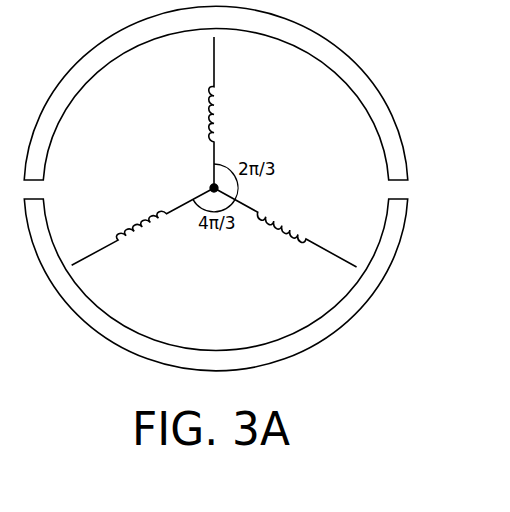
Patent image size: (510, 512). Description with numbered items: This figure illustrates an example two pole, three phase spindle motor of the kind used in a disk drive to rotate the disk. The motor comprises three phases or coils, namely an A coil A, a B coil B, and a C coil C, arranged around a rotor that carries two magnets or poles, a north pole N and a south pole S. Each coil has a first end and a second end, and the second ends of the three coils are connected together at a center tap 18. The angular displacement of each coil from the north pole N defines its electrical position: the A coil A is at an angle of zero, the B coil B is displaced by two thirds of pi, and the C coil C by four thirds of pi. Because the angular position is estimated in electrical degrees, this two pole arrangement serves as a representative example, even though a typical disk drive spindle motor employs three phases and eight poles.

The center tap 18 is at (208, 186).
The A coil A is at (226, 112).
The B coil B is at (283, 230).
The C coil C is at (141, 224).
The north pole N is at (216, 93).
The south pole S is at (215, 285).